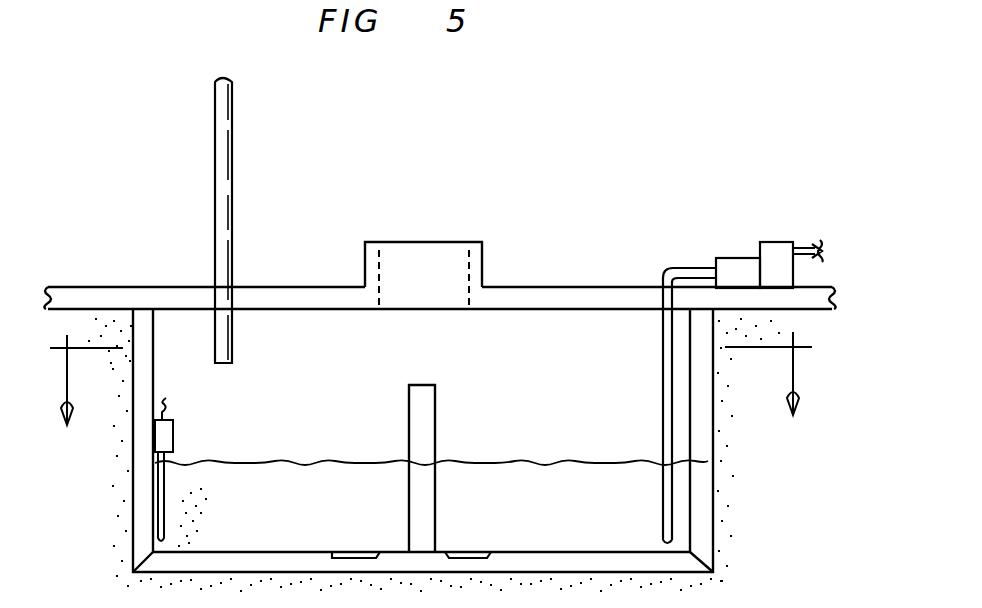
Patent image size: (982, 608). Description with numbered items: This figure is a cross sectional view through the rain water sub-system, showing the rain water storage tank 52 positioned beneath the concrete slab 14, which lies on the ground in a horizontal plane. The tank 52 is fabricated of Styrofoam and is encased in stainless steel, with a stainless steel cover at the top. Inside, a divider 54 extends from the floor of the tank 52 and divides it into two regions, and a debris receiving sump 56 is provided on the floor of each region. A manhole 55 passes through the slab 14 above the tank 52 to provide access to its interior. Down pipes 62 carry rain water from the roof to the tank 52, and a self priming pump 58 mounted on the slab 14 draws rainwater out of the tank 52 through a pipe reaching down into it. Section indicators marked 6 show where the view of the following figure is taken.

The concrete slab 14 is at (116, 287).
The down pipes 62 is at (228, 228).
The manhole 55 is at (445, 238).
The divider 54 is at (435, 407).
The debris receiving sump 56 is at (470, 550).
The rain water storage tank 52 is at (687, 497).
The self priming pump 58 is at (770, 242).
The section line 6- 6 is at (427, 368).